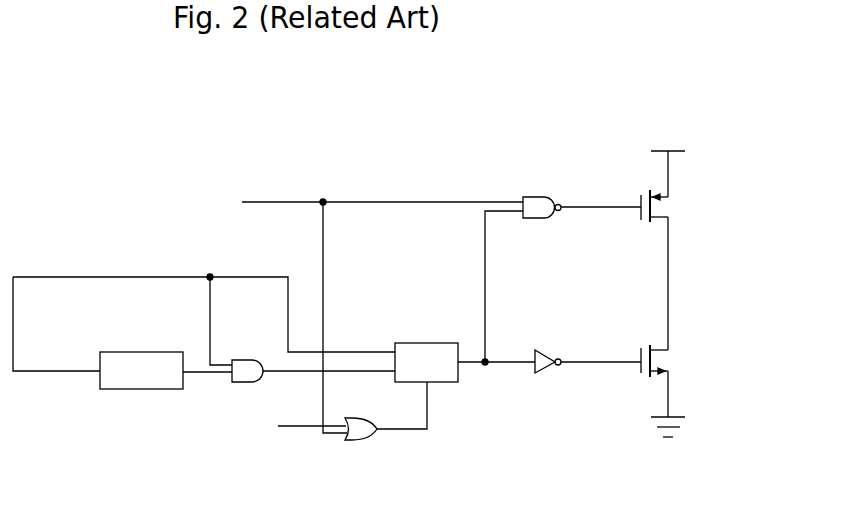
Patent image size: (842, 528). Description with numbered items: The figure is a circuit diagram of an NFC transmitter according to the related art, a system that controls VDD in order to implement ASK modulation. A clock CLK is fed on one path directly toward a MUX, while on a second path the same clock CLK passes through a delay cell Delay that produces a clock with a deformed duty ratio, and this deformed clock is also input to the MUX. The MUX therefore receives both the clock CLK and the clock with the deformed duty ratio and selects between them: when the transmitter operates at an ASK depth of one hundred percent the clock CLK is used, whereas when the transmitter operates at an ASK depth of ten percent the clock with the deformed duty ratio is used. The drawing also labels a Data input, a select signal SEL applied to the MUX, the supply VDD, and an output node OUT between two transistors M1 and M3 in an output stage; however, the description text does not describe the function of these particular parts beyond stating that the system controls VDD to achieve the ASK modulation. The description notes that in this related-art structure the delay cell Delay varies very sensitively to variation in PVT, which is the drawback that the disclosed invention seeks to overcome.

The PMOS pull-up transistor M1 is at (669, 206).
The NMOS pull-down transistor M3 is at (670, 361).
The clock CLK is at (204, 309).
The delay cell Delay is at (166, 370).
The element MUX is at (456, 320).
The data signal input Data is at (355, 311).
The select signal input SEL is at (289, 427).
The element VDD is at (667, 160).
The output node OUT is at (691, 283).